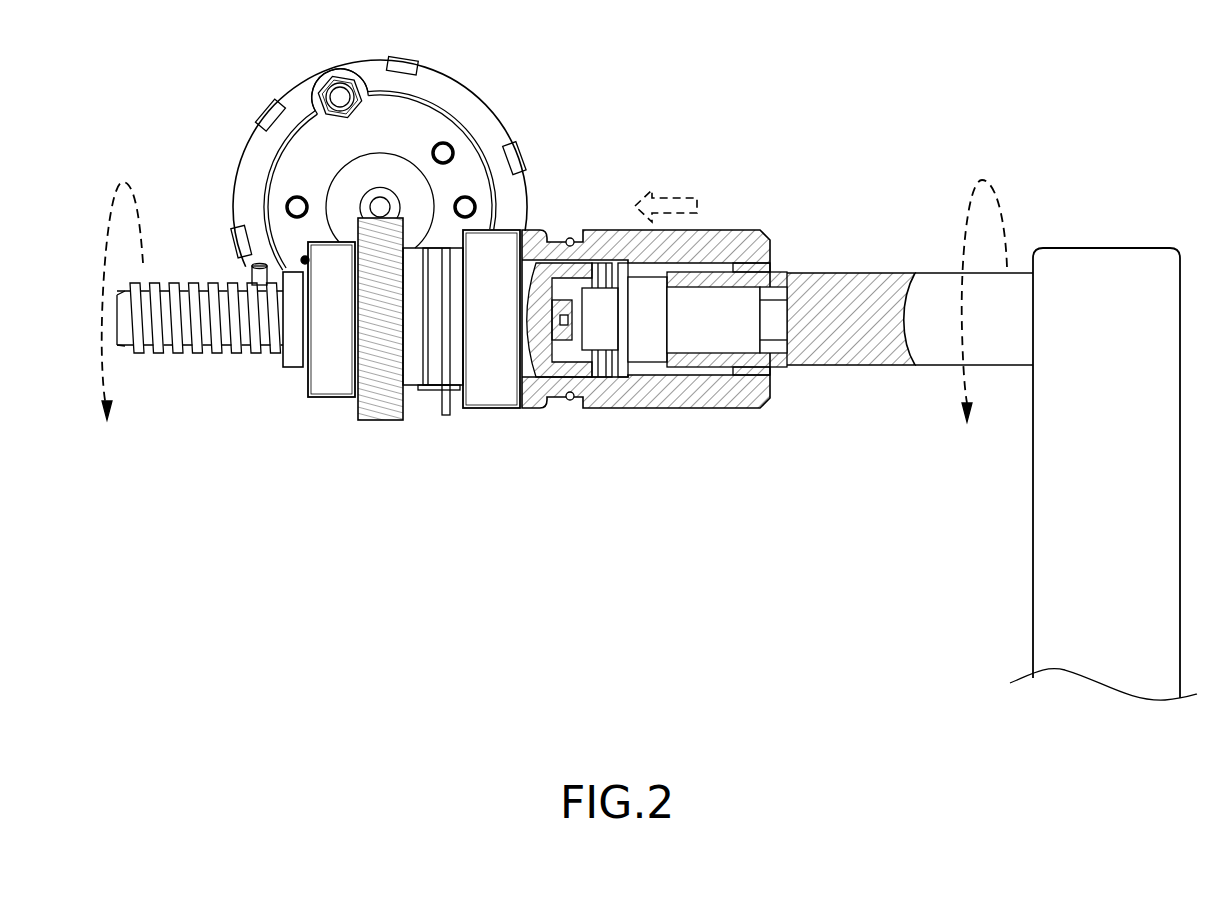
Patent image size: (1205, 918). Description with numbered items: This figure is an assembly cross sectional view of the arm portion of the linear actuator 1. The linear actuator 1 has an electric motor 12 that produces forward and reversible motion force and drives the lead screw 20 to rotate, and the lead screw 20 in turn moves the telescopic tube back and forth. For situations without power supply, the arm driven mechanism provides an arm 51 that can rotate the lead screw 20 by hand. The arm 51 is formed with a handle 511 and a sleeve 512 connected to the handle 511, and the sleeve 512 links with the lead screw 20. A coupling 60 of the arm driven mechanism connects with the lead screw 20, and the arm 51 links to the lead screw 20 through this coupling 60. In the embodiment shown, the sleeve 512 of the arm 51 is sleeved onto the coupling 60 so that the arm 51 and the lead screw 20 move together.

The linear actuator 1 is at (757, 76).
The electric motor 12 is at (475, 115).
The lead screw 20 is at (188, 330).
The arm 51 is at (1075, 136).
The handle 511 is at (1105, 280).
The sleeve 512 is at (857, 287).
The coupling 60 is at (675, 392).